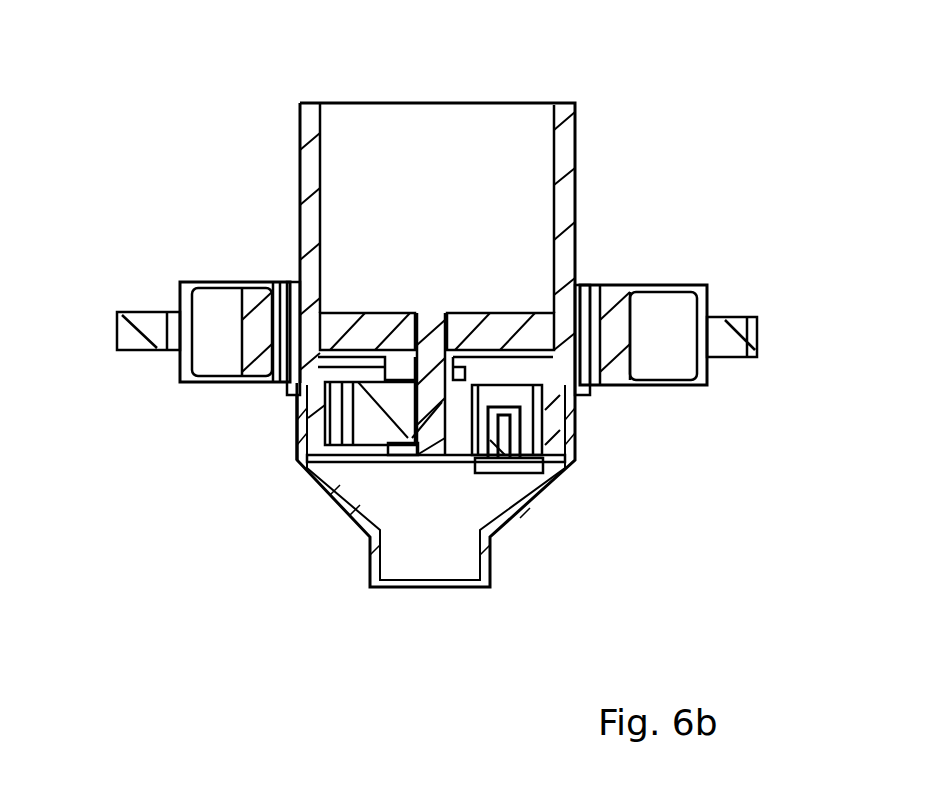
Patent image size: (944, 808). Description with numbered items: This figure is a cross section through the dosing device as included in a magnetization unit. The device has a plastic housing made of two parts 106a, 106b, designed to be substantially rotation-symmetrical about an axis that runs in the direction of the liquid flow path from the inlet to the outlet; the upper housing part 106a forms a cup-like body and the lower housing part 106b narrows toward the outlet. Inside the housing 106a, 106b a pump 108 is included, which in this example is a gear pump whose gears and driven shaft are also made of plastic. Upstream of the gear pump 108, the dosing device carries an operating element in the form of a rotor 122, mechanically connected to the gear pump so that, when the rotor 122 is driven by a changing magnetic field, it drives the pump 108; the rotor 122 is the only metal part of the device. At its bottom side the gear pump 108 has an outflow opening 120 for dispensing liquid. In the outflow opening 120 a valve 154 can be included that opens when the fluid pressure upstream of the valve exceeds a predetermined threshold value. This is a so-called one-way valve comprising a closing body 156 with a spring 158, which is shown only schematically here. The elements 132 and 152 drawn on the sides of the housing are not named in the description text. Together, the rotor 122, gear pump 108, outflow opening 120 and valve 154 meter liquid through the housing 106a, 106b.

The housing part 106a is at (573, 154).
The housing part 106b is at (573, 440).
The pump 108 is at (295, 455).
The outflow opening 120 is at (550, 462).
The rotor 122 is at (366, 330).
The shaft 132 is at (138, 342).
The clamp 152 is at (212, 302).
The valve 154 is at (520, 467).
The closing body 156 is at (497, 457).
The spring 158 is at (520, 423).